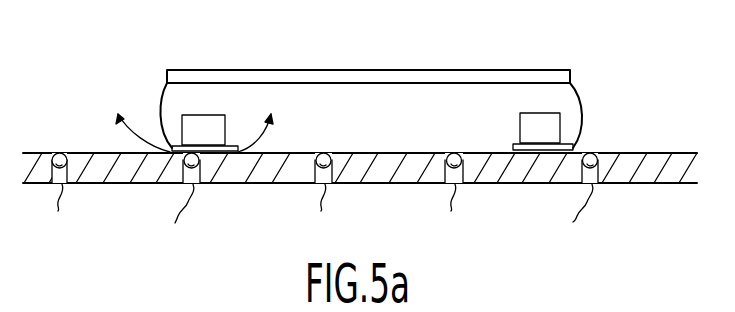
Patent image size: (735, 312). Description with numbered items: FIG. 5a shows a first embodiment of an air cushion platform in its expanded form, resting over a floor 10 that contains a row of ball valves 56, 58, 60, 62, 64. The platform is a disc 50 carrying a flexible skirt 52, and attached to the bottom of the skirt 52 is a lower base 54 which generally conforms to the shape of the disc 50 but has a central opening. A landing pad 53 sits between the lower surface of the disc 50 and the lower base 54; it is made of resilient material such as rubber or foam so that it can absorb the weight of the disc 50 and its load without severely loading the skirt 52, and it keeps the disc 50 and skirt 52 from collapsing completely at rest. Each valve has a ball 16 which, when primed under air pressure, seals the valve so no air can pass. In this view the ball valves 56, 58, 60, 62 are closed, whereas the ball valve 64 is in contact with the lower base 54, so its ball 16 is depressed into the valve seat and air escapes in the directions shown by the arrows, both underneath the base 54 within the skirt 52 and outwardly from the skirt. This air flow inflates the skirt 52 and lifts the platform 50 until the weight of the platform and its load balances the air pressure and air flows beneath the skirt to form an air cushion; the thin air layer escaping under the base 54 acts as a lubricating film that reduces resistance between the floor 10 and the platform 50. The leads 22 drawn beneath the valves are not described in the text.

The floor 10 is at (667, 156).
The ball 16 is at (318, 152).
The leads 22 is at (325, 219).
The disc 50 is at (383, 68).
The flexible skirt 52 is at (584, 107).
The landing pad 53 is at (520, 125).
The lower base 54 is at (236, 146).
The ball valve 56 is at (68, 184).
The ball valve 58 is at (333, 184).
The ball valve 60 is at (464, 184).
The ball valve 62 is at (599, 172).
The ball valve 64 is at (201, 184).